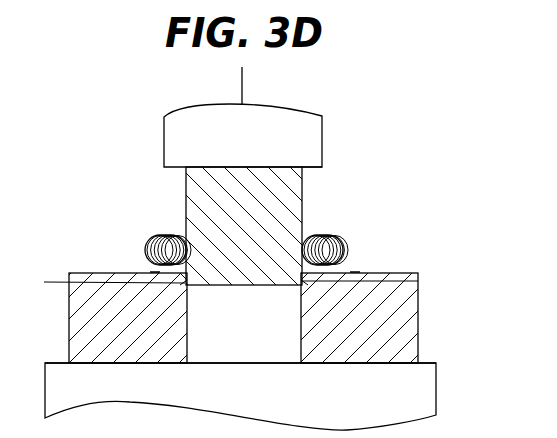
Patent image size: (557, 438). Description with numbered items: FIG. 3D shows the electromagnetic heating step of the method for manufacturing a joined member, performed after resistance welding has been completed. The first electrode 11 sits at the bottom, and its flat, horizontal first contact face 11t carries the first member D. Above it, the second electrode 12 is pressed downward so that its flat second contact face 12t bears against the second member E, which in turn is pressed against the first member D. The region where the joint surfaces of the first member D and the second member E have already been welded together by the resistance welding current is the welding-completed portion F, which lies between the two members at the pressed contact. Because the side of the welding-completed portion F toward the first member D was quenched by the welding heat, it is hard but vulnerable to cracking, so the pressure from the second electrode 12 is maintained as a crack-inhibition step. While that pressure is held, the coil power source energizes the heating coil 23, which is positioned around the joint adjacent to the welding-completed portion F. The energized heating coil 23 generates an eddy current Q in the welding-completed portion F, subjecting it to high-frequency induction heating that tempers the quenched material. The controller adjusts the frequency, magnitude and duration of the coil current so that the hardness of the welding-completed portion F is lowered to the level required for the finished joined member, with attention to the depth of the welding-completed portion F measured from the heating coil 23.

The second electrode 12 is at (322, 140).
The second contact face 12t is at (314, 175).
The second member E is at (303, 218).
The heating coil 23 is at (343, 245).
The first member D is at (419, 315).
The welding-completed portion F is at (420, 273).
The eddy current Q is at (356, 273).
The first electrode 11 is at (253, 263).
The first contact face 11t is at (420, 362).